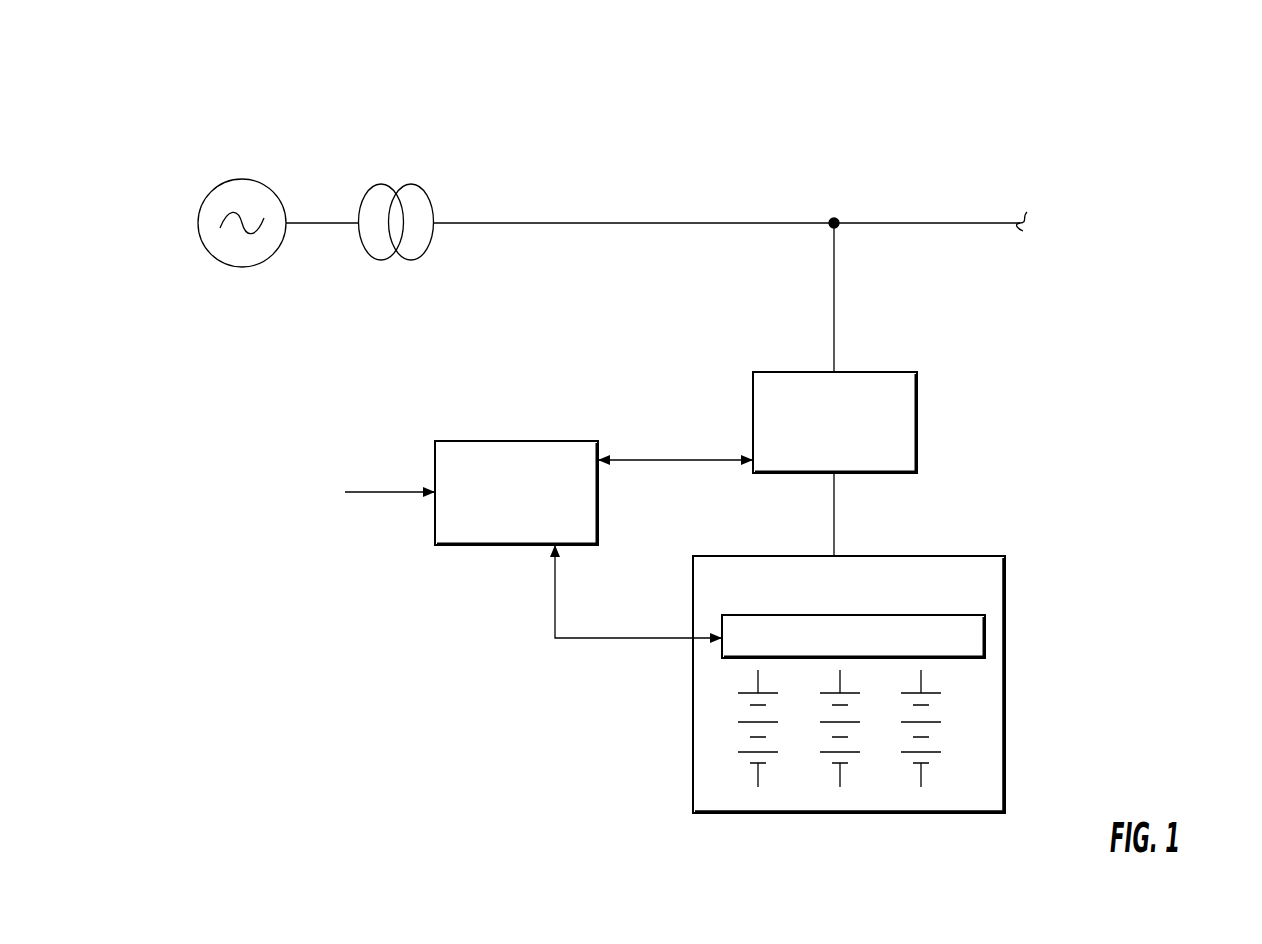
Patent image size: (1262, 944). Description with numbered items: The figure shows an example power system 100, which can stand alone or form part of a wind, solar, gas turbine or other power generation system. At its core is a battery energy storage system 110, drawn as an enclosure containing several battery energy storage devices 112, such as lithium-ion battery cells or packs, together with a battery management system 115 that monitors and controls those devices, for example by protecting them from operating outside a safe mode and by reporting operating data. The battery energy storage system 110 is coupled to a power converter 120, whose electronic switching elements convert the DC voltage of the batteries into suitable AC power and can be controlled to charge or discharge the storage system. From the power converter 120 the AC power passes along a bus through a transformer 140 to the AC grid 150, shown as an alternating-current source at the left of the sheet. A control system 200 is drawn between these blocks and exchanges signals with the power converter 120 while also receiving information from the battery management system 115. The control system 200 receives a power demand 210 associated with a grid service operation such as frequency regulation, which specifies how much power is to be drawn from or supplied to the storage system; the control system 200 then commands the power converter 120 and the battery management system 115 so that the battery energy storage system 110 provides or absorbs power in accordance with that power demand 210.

The power system 100 is at (1157, 125).
The battery energy storage system (BESS) 110 is at (1006, 581).
The battery energy storage devices 112 is at (920, 778).
The battery management system (BMS) 115 is at (986, 640).
The power converter 120 is at (918, 427).
The transformer 140 is at (422, 186).
The AC grid 150 is at (243, 178).
The control system 200 is at (492, 547).
The power demand 210 is at (395, 495).